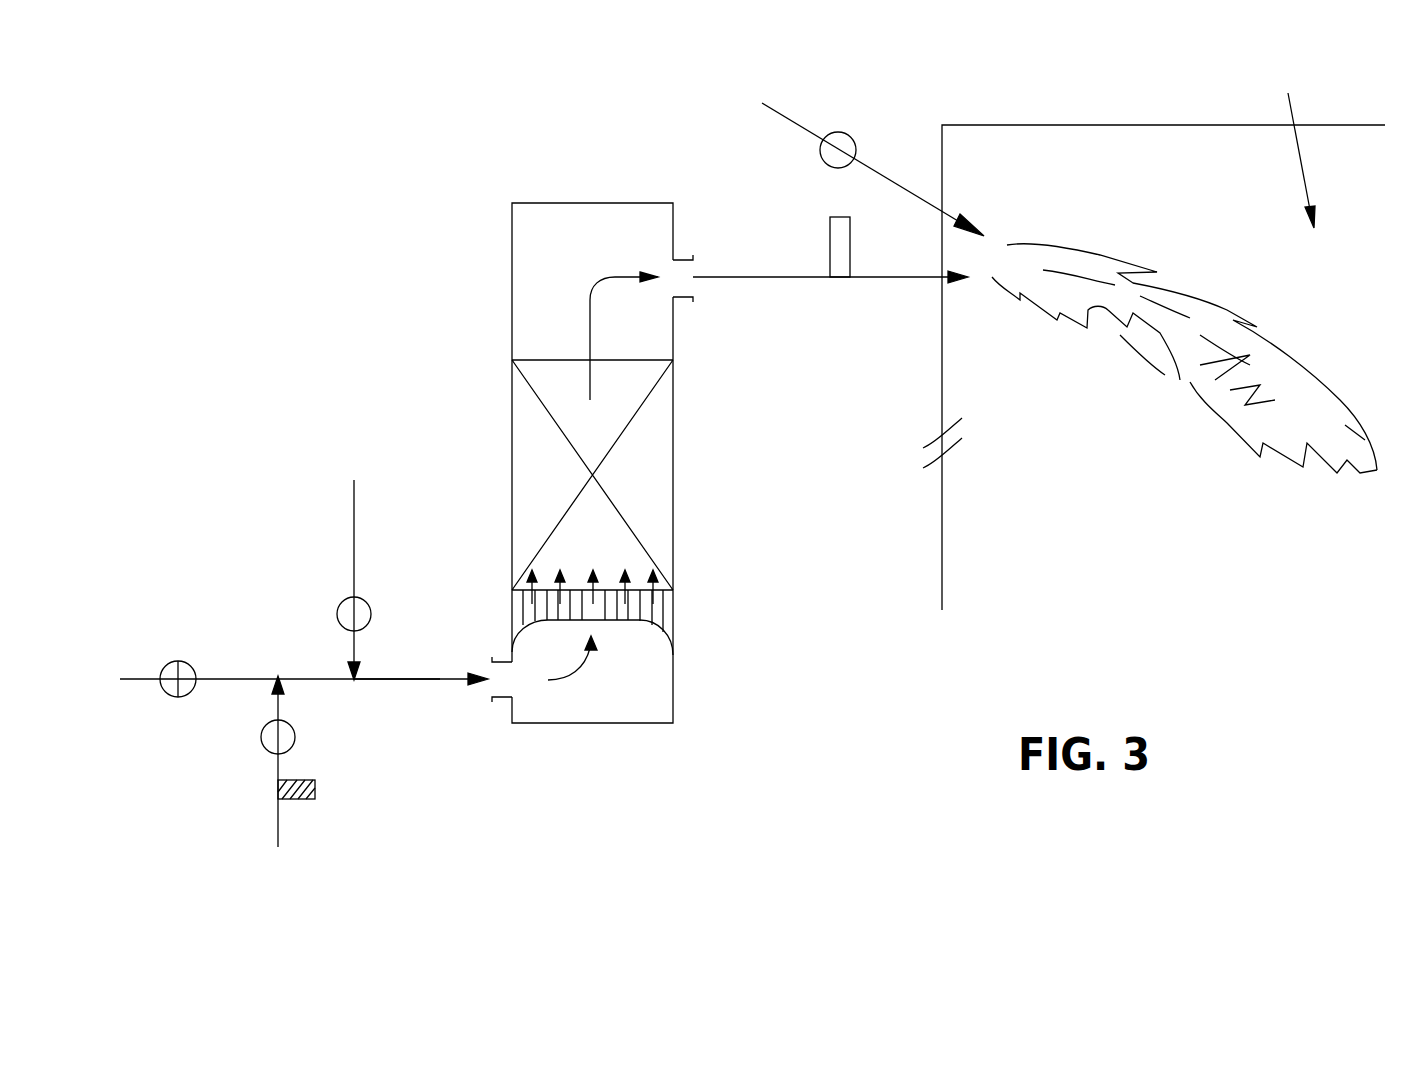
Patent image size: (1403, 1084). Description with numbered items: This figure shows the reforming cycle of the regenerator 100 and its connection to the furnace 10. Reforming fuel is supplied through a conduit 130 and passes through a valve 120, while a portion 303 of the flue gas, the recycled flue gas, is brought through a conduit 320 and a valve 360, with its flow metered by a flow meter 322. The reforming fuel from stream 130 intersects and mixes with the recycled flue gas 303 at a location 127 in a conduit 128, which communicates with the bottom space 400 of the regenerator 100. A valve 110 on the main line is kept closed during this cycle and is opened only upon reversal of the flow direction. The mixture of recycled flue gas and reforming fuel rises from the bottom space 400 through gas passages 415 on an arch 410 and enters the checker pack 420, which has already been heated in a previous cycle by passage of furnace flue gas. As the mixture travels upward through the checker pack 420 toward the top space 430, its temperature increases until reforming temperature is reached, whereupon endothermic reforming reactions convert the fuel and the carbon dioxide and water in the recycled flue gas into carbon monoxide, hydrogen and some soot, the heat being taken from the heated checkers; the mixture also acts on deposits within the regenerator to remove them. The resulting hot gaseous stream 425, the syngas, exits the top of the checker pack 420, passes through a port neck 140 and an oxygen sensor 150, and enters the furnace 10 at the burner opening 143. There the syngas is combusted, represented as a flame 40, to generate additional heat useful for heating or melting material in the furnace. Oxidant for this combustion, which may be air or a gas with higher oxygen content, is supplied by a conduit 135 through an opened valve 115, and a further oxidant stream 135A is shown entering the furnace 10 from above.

The furnace 10 is at (1150, 125).
The flame 40 is at (1225, 308).
The regenerator 100 is at (582, 203).
The valve 110 is at (187, 662).
The valve 115 is at (824, 138).
The valve 120 is at (371, 614).
The location 127 is at (357, 683).
The conduit 128 is at (443, 683).
The conduit 130 is at (355, 546).
The conduit 135 is at (790, 122).
The secondary air stream 135A is at (1300, 150).
The port neck 140 is at (796, 283).
The burner nozzle 143 is at (905, 276).
The oxygen sensor 150 is at (829, 233).
The portion of the flue gas 303 is at (278, 847).
The conduit 320 is at (276, 811).
The flow meter 322 is at (315, 790).
The valve 360 is at (261, 735).
The bottom space 400 is at (592, 662).
The arch 410 is at (668, 600).
The gas passages 415 is at (622, 620).
The checker pack 420 is at (655, 468).
The gaseous stream 425 is at (596, 298).
The top space 430 is at (546, 233).